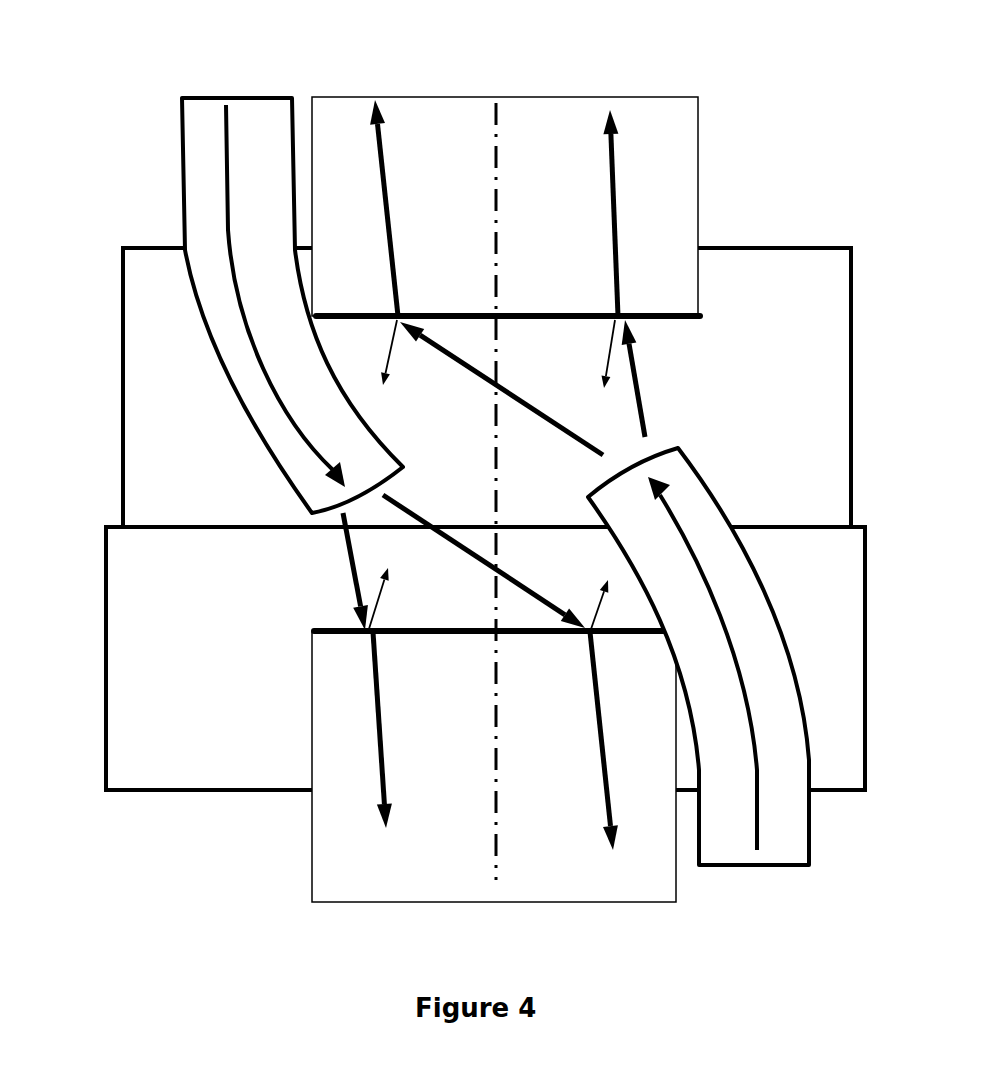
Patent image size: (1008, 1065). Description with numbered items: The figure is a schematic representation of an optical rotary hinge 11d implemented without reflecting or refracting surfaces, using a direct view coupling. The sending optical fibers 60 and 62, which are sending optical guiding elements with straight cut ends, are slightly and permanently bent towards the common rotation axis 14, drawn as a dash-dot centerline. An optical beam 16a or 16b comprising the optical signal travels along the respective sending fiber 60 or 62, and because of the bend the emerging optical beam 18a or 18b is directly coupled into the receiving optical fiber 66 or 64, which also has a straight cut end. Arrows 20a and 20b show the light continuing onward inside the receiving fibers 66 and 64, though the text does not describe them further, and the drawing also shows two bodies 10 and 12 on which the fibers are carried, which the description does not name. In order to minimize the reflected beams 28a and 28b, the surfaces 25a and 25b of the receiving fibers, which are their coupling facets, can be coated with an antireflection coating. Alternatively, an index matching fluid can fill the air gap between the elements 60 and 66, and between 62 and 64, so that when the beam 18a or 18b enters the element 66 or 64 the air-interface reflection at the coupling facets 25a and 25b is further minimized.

The first substrate layer 10 is at (763, 240).
The optical rotary hinge 11d is at (758, 91).
The second substrate layer 12 is at (210, 787).
The common rotation axis 14 is at (490, 845).
The optical beam 16a is at (225, 150).
The optical beam 16b is at (720, 620).
The optical beam 18a is at (350, 568).
The optical beam 18b is at (650, 415).
The first transmitted optical beam 20a is at (387, 745).
The second transmitted optical beam 20b is at (622, 202).
The coupling facet 25a is at (520, 637).
The coupling facet 25b is at (588, 313).
The reflected beam 28a is at (393, 588).
The reflected beam 28b is at (605, 348).
The sending optical fiber 60 is at (260, 268).
The sending optical fiber 62 is at (709, 693).
The receiving optical fiber 64 is at (452, 90).
The receiving optical fiber 66 is at (617, 900).